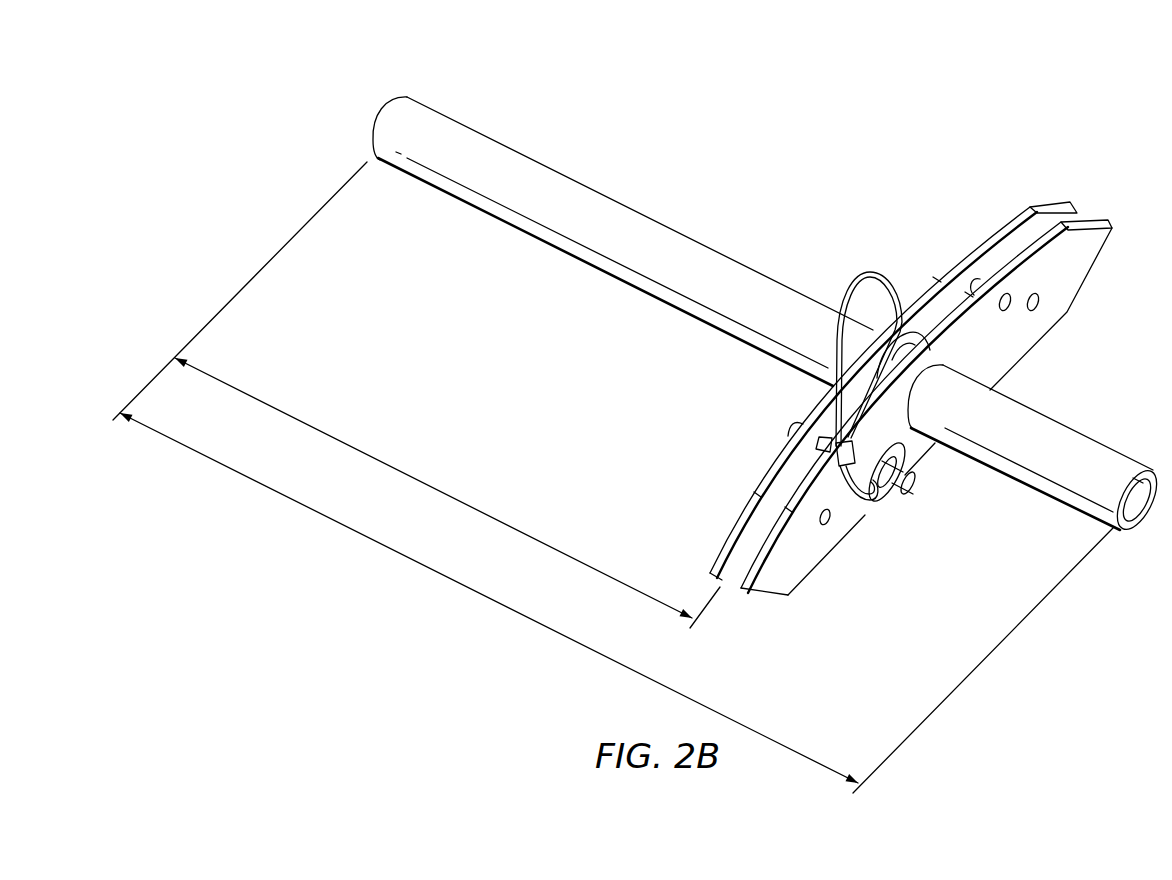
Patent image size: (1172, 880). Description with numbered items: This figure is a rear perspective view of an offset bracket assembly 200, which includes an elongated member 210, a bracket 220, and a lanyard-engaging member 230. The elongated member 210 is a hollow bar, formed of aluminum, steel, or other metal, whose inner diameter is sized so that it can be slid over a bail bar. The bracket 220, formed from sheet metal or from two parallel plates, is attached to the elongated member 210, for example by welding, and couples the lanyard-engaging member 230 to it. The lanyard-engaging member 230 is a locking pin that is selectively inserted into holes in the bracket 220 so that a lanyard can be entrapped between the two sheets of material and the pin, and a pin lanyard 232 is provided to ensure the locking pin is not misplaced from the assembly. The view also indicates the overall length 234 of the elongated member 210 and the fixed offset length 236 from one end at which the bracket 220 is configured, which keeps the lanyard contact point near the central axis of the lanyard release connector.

The offset bracket assembly 200 is at (1055, 136).
The elongated member 210 is at (702, 258).
The bracket 220 is at (817, 552).
The lanyard-engaging member 230 is at (915, 463).
The pin lanyard 232 is at (870, 275).
The overall length 234 is at (477, 595).
The fixed offset length 236 is at (433, 489).